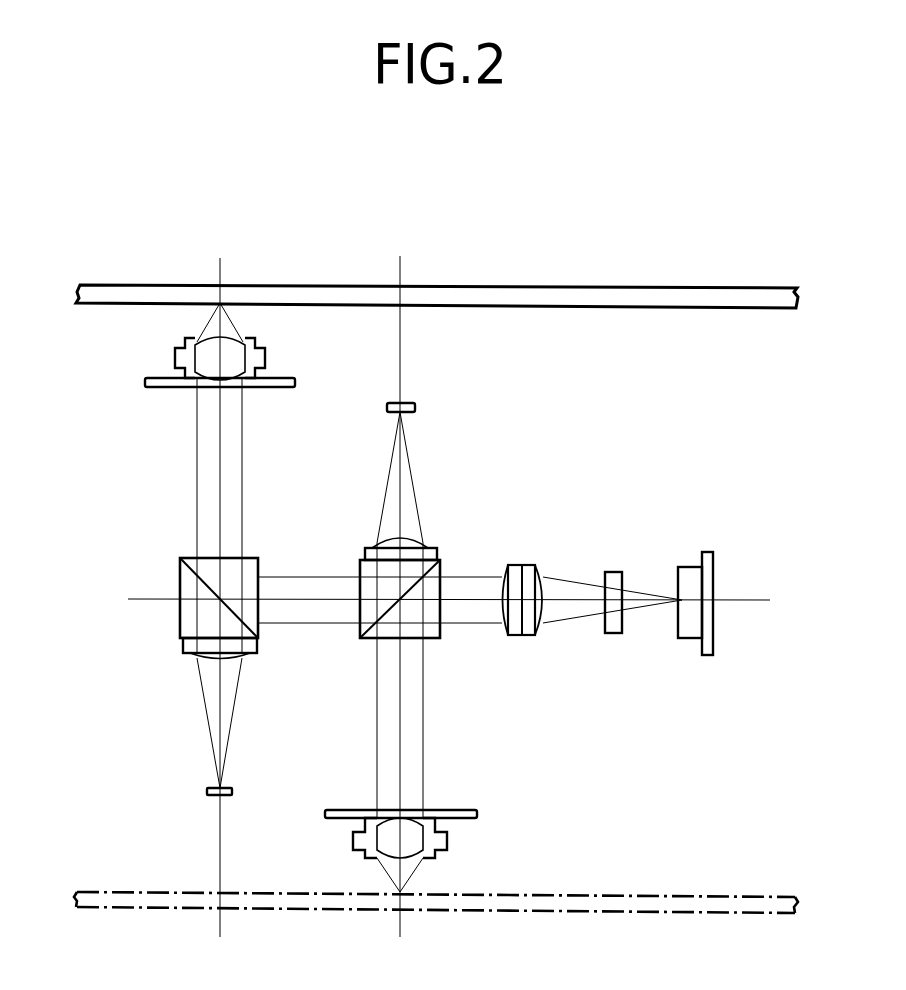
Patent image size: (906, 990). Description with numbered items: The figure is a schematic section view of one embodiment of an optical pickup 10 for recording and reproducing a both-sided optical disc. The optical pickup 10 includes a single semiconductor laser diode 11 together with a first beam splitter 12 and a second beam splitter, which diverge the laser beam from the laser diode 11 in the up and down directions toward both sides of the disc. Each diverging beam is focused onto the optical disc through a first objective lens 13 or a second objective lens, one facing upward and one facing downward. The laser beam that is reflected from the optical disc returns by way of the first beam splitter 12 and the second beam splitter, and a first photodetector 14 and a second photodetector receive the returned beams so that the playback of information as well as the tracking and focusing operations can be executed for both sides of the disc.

The optical pickup 10 is at (137, 692).
The semiconductor laser diode 11 is at (705, 648).
The first beam splitter 12 is at (440, 638).
The first objective lens 13 is at (447, 843).
The first photodetector 14 is at (411, 402).